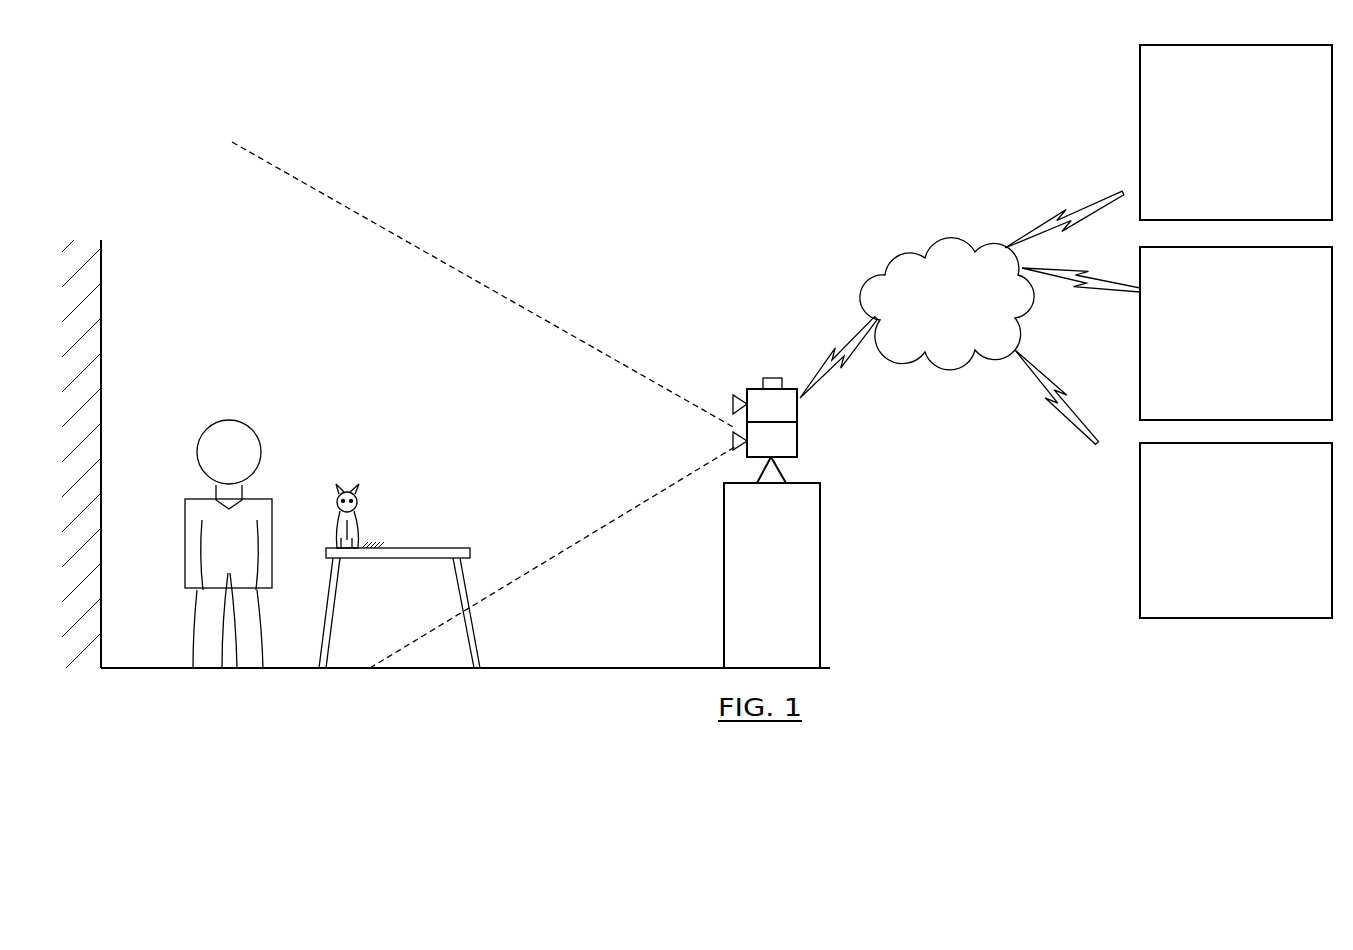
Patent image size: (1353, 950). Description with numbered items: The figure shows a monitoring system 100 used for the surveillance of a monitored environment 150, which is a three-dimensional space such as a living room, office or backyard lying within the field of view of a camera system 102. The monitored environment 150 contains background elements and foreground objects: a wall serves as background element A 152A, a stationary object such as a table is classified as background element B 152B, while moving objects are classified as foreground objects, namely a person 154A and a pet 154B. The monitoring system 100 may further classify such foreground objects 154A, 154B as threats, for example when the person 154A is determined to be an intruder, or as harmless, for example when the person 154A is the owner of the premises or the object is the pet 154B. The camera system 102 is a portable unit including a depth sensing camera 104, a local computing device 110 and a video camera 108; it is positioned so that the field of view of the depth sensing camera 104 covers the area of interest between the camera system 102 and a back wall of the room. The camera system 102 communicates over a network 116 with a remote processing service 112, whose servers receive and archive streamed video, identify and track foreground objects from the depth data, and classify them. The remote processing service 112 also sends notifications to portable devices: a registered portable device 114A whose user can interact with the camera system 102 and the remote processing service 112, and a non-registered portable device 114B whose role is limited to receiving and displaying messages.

The monitoring system 100 is at (776, 172).
The camera system 102 is at (764, 370).
The depth sensing camera 104 is at (738, 440).
The video camera 108 is at (790, 457).
The local computing device 110 is at (797, 443).
The remote processing service 112 is at (1219, 581).
The registered portable device 114A is at (1213, 182).
The non-registered portable device 114B is at (1213, 383).
The network 116 is at (932, 331).
The monitored environment 150 is at (169, 237).
The background element A 152A is at (103, 377).
The background element B 152B is at (477, 651).
The foreground object 154A is at (253, 430).
The foreground object 154B is at (366, 505).